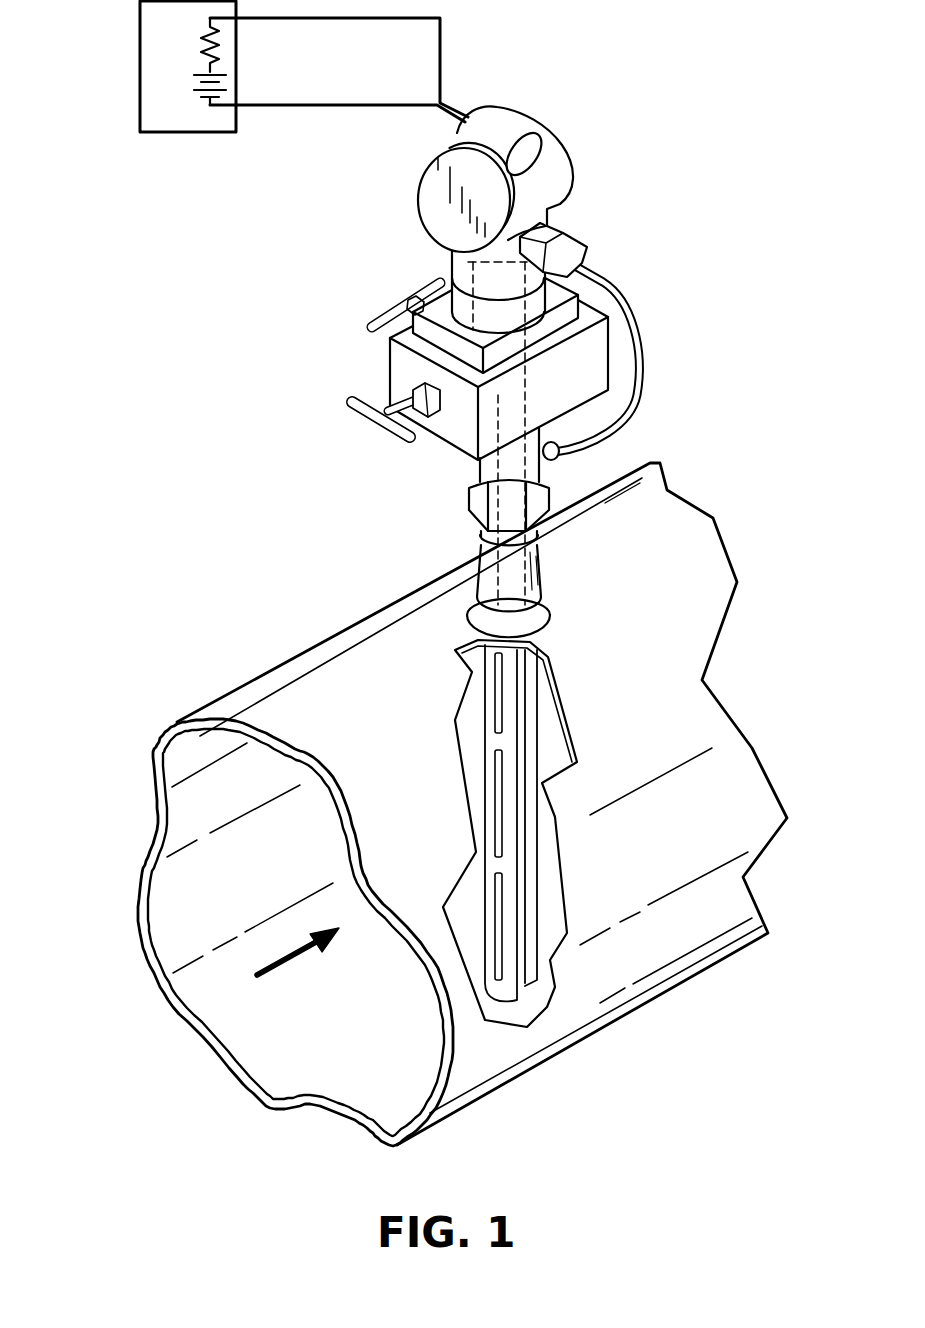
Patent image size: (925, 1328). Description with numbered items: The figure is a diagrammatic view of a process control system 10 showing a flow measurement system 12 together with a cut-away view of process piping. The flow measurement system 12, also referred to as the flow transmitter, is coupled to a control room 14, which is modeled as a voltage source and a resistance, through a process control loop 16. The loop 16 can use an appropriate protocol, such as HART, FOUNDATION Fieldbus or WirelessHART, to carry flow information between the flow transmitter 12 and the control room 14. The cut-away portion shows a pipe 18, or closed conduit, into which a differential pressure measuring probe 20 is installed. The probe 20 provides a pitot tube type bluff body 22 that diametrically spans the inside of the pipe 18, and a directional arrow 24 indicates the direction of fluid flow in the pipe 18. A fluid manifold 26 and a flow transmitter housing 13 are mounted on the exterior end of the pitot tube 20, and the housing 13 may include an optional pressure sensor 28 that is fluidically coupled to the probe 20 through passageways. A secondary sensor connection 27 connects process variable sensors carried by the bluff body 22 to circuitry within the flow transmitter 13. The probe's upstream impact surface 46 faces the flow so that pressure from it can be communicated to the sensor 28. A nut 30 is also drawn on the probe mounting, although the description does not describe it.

The process control system 10 is at (220, 448).
The flow measurement system 12 is at (658, 270).
The flow transmitter housing 13 is at (545, 170).
The control room 14 is at (188, 66).
The process control loop 16 is at (295, 20).
The pipe 18 is at (150, 803).
The differential pressure measuring probe 20 is at (558, 569).
The pitot tube type bluff body 22 is at (468, 722).
The directional arrow 24 is at (293, 955).
The fluid manifold 26 is at (598, 345).
The secondary sensor connection 27 is at (607, 275).
The pressure sensor 28 is at (448, 273).
The nut 30 is at (468, 502).
The impact surface 46 is at (507, 990).